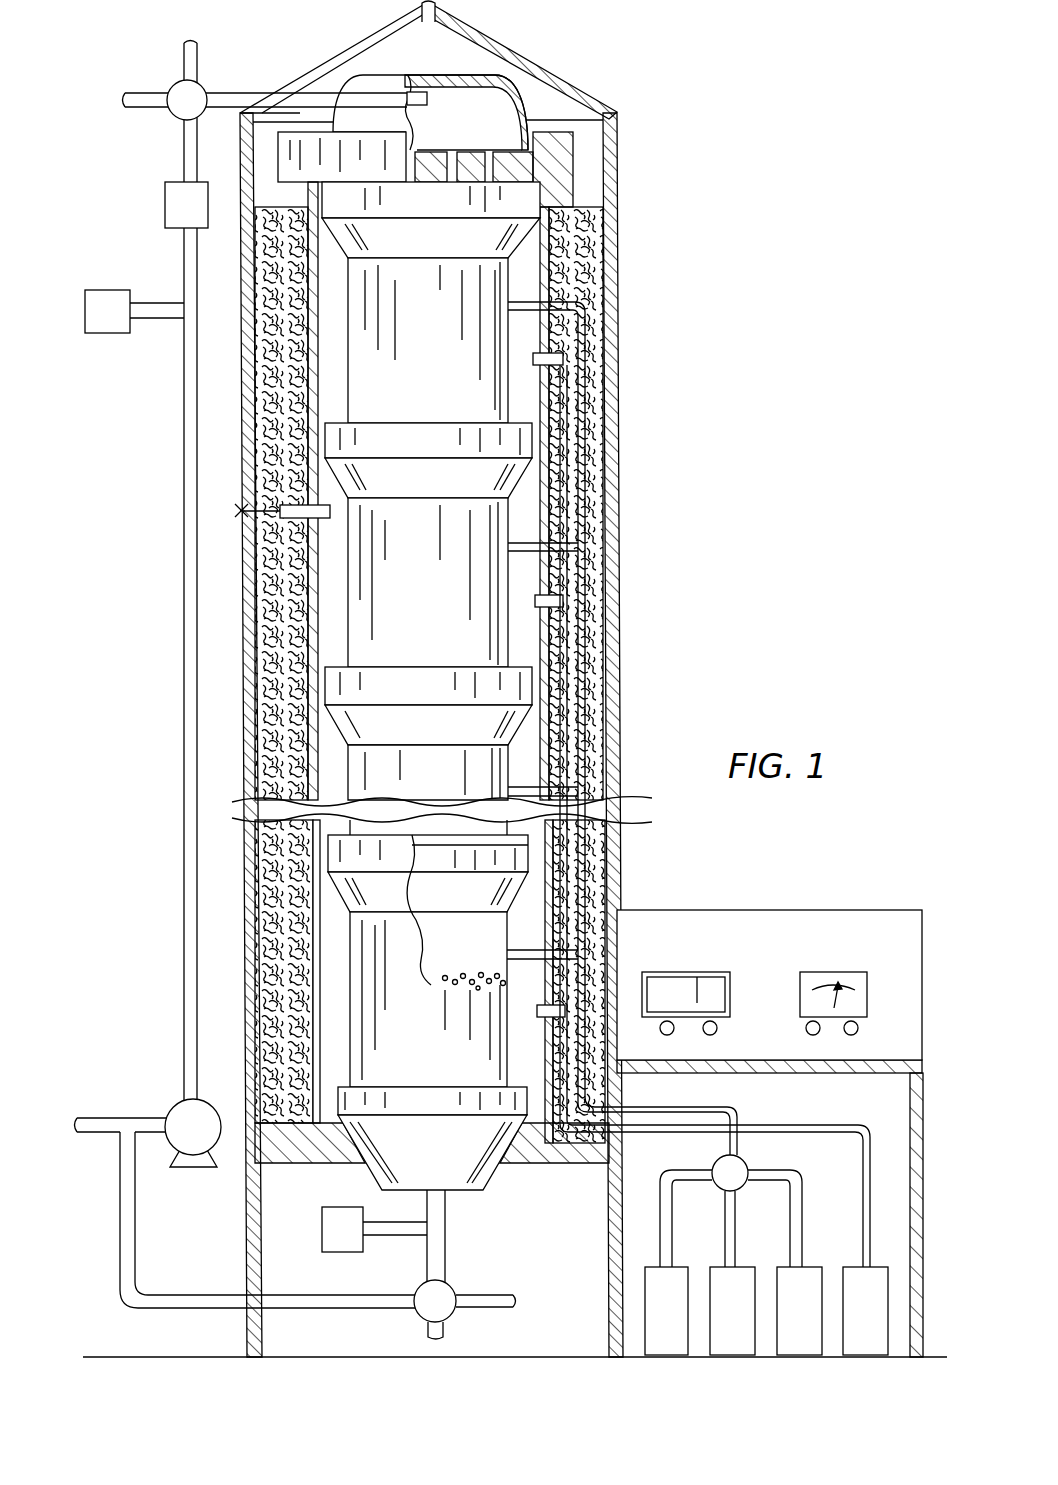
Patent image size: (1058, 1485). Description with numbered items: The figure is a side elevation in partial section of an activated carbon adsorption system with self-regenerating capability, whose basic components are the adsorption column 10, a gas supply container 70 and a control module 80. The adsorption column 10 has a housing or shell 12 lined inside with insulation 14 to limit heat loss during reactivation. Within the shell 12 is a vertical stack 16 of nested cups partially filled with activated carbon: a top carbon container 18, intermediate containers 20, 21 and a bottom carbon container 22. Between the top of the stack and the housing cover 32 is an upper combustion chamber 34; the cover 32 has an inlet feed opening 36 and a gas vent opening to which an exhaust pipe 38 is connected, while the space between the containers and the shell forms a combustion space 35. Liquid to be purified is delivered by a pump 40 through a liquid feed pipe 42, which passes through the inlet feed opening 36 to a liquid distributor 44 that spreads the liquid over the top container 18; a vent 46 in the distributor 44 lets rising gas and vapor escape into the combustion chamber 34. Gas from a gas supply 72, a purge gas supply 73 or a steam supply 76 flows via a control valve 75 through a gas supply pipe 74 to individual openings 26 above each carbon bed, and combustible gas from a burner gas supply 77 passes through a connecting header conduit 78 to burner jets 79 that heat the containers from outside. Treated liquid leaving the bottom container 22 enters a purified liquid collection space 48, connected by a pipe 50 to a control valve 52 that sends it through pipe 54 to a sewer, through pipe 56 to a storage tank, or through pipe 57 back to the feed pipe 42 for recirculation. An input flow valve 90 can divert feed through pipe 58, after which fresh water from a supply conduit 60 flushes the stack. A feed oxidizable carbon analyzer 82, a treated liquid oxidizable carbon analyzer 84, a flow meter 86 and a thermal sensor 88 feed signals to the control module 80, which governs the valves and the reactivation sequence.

The adsorption column 10 is at (600, 96).
The housing or shell 12 is at (614, 392).
The insulation 14 is at (268, 328).
The vertical stack 16 is at (520, 574).
The top carbon container 18 is at (431, 302).
The intermediate container 20 is at (428, 545).
The intermediate container 21 is at (428, 733).
The bottom carbon container 22 is at (428, 1005).
The individual openings 26 is at (515, 302).
The housing cover 32 is at (505, 66).
The upper combustion chamber 34 is at (452, 55).
The combustion space 35 is at (530, 484).
The inlet feed opening 36 is at (280, 96).
The exhaust pipe 38 is at (440, 10).
The pump 40 is at (172, 1098).
The liquid feed pipe 42 is at (228, 96).
The liquid distributor 44 is at (465, 150).
The vent 46 is at (540, 90).
The purified liquid collection space 48 is at (490, 1172).
The pipe 50 is at (448, 1226).
The control valve 52 is at (448, 1290).
The pipe 54 is at (502, 1296).
The pipe 56 is at (446, 1328).
The pipe 57 is at (175, 1300).
The pipe 58 is at (193, 46).
The supply conduit 60 is at (132, 108).
The gas supply container 70 is at (890, 1112).
The gas supply 72 is at (666, 1311).
The purge gas supply 73 is at (732, 1311).
The gas supply pipe 74 is at (580, 618).
The control valve 75 is at (750, 1162).
The steam supply 76 is at (799, 1311).
The burner gas supply 77 is at (865, 1311).
The connecting header conduit 78 is at (790, 1122).
The burner jets 79 is at (533, 359).
The control module 80 is at (845, 915).
The feed oxidizable carbon analyzer 82 is at (102, 294).
The treated liquid oxidizable carbon analyzer 84 is at (374, 1229).
The flow meter 86 is at (165, 205).
The thermal sensor 88 is at (332, 514).
The input flow valve 90 is at (172, 84).